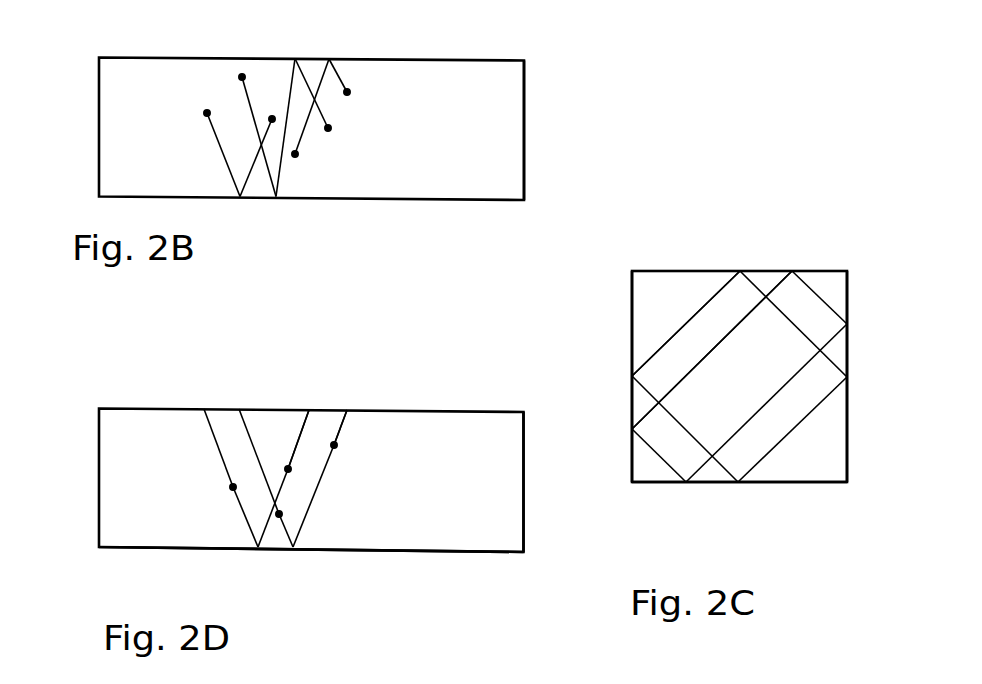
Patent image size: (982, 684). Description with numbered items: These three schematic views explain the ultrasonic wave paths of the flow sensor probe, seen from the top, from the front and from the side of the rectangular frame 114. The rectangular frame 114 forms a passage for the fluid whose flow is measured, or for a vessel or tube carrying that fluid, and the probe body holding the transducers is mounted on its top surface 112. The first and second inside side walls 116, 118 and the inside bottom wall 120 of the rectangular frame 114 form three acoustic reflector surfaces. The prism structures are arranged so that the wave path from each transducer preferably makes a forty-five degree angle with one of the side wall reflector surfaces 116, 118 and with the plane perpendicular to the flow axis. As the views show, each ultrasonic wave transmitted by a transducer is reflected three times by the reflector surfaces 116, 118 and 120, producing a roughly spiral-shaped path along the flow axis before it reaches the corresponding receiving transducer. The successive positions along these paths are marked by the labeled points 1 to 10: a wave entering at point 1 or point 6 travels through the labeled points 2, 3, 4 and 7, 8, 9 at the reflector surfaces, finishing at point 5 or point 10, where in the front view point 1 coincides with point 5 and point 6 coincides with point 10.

In FIG. 2B, the labeled reflection point 1 is at (214, 146).
In FIG. 2D, the labeled reflection point 1 is at (215, 434).
In FIG. 2C, the labeled reflection point 1 is at (783, 311).
In FIG. 2B, the labeled reflection point 2 is at (254, 170).
In FIG. 2D, the labeled reflection point 2 is at (236, 515).
In FIG. 2C, the labeled reflection point 2 is at (675, 329).
In FIG. 2B, the labeled reflection point 3 is at (279, 121).
In FIG. 2D, the labeled reflection point 3 is at (269, 521).
In FIG. 2C, the labeled reflection point 3 is at (688, 443).
In FIG. 2B, the labeled reflection point 4 is at (305, 77).
In FIG. 2D, the labeled reflection point 4 is at (297, 448).
In FIG. 2C, the labeled reflection point 4 is at (801, 424).
In FIG. 2B, the labeled reflection point 5 is at (335, 136).
In FIG. 2D, the labeled reflection point 5 is at (302, 425).
In FIG. 2C, the labeled reflection point 5 is at (686, 323).
In FIG. 2B, the labeled reflection point 6 is at (250, 132).
In FIG. 2D, the labeled reflection point 6 is at (257, 447).
In FIG. 2C, the labeled reflection point 6 is at (810, 284).
In FIG. 2B, the labeled reflection point 7 is at (283, 141).
In FIG. 2D, the labeled reflection point 7 is at (289, 525).
In FIG. 2C, the labeled reflection point 7 is at (703, 355).
In FIG. 2B, the labeled reflection point 8 is at (310, 113).
In FIG. 2D, the labeled reflection point 8 is at (310, 509).
In FIG. 2C, the labeled reflection point 8 is at (662, 469).
In FIG. 2B, the labeled reflection point 9 is at (336, 59).
In FIG. 2D, the labeled reflection point 9 is at (339, 441).
In FIG. 2C, the labeled reflection point 9 is at (775, 398).
In FIG. 2B, the labeled reflection point 10 is at (359, 102).
In FIG. 2D, the labeled reflection point 10 is at (348, 413).
In FIG. 2C, the labeled reflection point 10 is at (712, 350).
In FIG. 2B, the top surface 112 is at (133, 126).
In FIG. 2D, the top surface 112 is at (148, 407).
In FIG. 2C, the top surface 112 is at (682, 270).
In FIG. 2B, the rectangular frame 114 is at (524, 61).
In FIG. 2D, the rectangular frame 114 is at (524, 493).
In FIG. 2C, the first inside side wall 116 is at (633, 302).
In FIG. 2C, the second inside side wall 118 is at (847, 432).
In FIG. 2D, the inside bottom wall 120 is at (138, 547).
In FIG. 2C, the inside bottom wall 120 is at (824, 480).